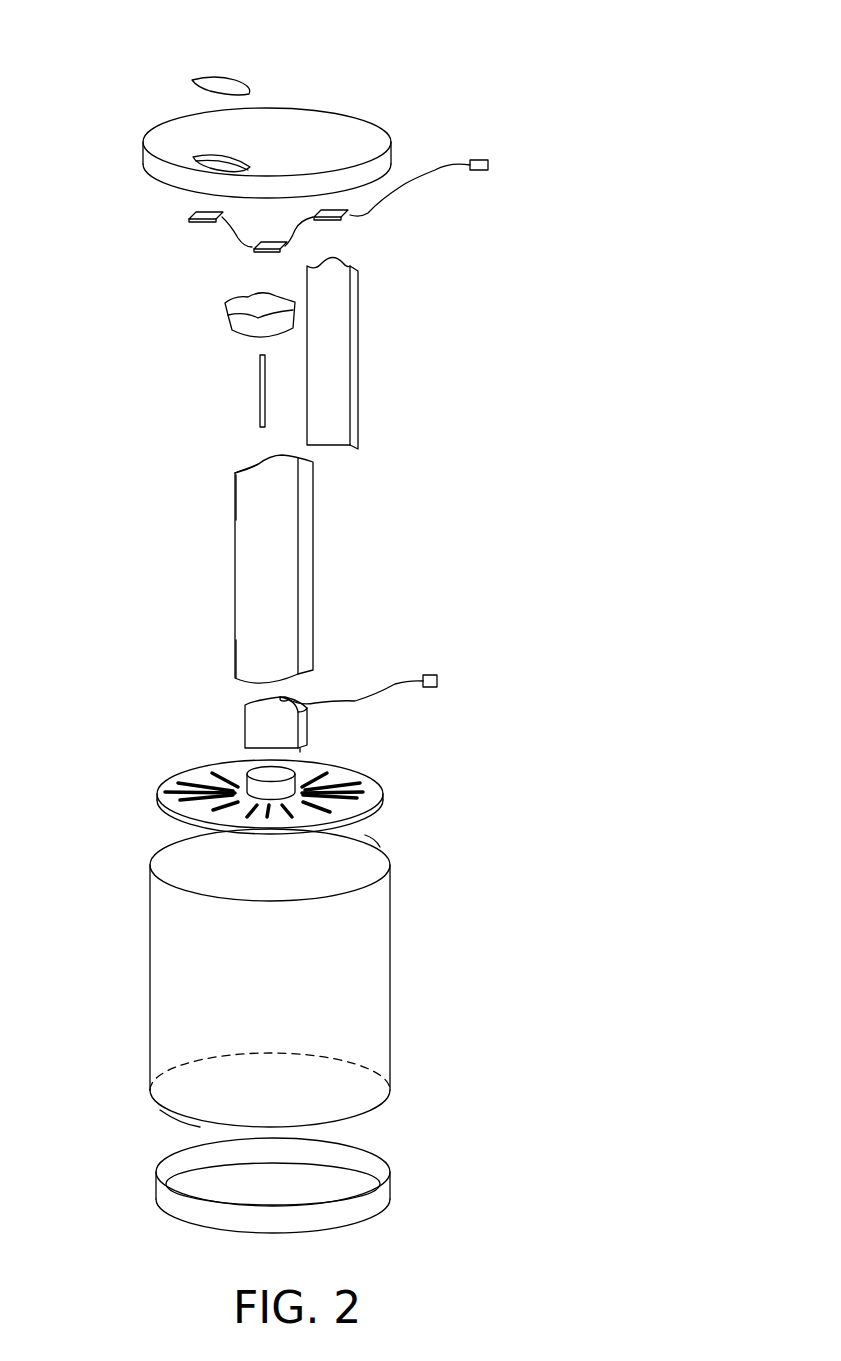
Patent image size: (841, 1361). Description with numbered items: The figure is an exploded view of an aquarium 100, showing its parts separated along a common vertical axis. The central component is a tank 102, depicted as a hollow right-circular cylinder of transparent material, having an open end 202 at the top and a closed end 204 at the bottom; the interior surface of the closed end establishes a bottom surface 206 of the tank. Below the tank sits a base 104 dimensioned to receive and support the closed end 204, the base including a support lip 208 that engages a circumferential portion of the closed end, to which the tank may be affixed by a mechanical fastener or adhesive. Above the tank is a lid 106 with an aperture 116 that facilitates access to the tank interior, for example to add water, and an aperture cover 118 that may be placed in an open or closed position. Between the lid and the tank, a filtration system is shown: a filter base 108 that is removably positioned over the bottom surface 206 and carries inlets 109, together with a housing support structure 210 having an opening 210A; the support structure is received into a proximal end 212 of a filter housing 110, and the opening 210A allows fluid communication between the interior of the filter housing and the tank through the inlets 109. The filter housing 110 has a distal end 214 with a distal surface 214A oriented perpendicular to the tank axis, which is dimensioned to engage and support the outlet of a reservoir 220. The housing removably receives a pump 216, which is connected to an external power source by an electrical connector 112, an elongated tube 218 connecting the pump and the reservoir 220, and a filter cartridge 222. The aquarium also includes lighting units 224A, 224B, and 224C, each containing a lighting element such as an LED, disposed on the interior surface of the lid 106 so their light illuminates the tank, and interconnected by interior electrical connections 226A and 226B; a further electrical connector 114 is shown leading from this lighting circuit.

The aquarium 100 is at (425, 46).
The tank 102 is at (392, 978).
The base 104 is at (390, 1165).
The lid 106 is at (362, 118).
The filter base 108 is at (377, 783).
The inlets 109 is at (170, 778).
The filter housing 110 is at (313, 563).
The electrical connector 112 is at (425, 688).
The electrical connector 114 is at (460, 170).
The aperture 116 is at (142, 143).
The aperture cover 118 is at (220, 85).
The open end 202 is at (387, 852).
The closed end 204 is at (190, 1122).
The bottom surface 206 is at (260, 1080).
The support lip 208 is at (259, 1156).
The housing support structure 210 is at (252, 770).
The opening 210A is at (303, 752).
The proximal end 212 is at (224, 672).
The distal end 214 is at (222, 474).
The distal surface 214A is at (240, 467).
The pump 216 is at (242, 715).
The tube 218 is at (260, 368).
The reservoir 220 is at (230, 302).
The filter cartridge 222 is at (353, 330).
The lighting unit 224A is at (188, 218).
The lighting unit 224B is at (262, 251).
The lighting unit 224C is at (350, 216).
The interior electrical connection 226A is at (240, 238).
The interior electrical connection 226B is at (300, 222).